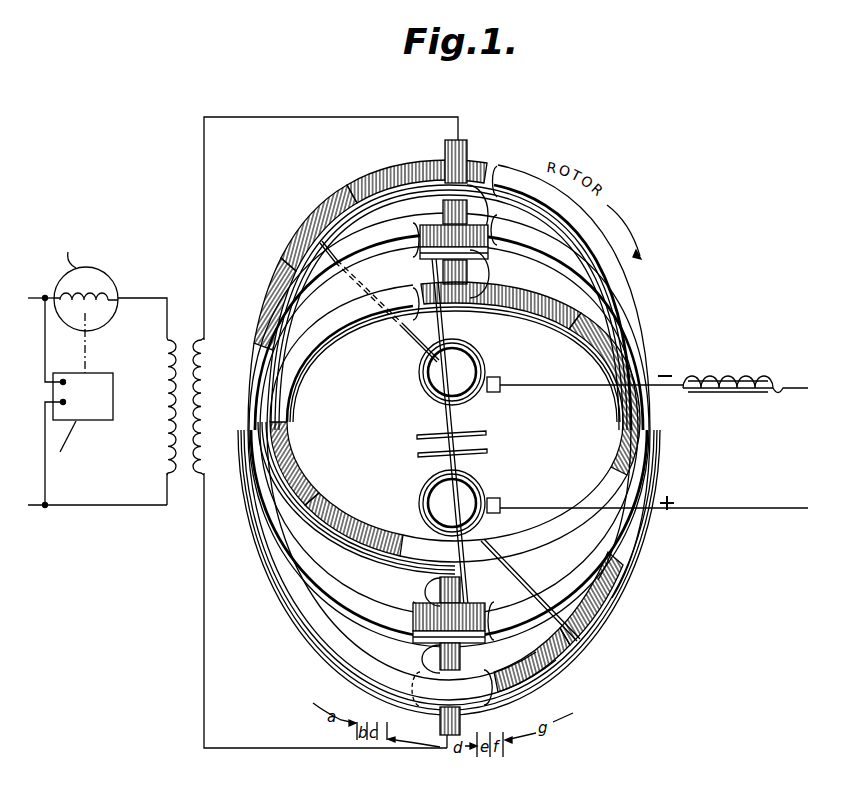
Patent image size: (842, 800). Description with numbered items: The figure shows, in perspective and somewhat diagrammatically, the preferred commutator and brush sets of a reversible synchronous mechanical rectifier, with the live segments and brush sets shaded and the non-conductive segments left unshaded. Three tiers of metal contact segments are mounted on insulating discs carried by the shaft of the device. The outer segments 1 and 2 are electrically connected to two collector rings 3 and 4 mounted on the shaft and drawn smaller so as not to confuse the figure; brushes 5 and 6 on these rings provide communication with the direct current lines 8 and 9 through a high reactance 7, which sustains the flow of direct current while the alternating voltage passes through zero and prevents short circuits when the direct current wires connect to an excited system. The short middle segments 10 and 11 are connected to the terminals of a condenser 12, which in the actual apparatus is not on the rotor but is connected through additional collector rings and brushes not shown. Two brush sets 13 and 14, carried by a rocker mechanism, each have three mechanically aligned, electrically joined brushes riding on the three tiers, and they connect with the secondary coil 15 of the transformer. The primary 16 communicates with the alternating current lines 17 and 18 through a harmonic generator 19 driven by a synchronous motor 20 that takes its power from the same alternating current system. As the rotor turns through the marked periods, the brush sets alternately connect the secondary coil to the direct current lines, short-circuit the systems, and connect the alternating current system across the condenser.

The segment 1 is at (425, 163).
The segment 2 is at (537, 337).
The collector ring 3 is at (473, 349).
The collector ring 4 is at (480, 488).
The brush 5 is at (495, 392).
The brush 6 is at (502, 505).
The high reactance 7 is at (722, 377).
The direct current line 8 is at (798, 388).
The direct current line 9 is at (803, 506).
The middle segment 10 is at (432, 230).
The middle segment 11 is at (480, 603).
The condenser 12 is at (490, 443).
The brush set 13 is at (470, 144).
The brush set 14 is at (460, 712).
The secondary coil 15 is at (205, 428).
The primary 16 is at (160, 423).
The alternating current line 17 is at (40, 290).
The alternating current line 18 is at (95, 493).
The harmonic generator 19 is at (98, 276).
The synchronous motor 20 is at (104, 431).